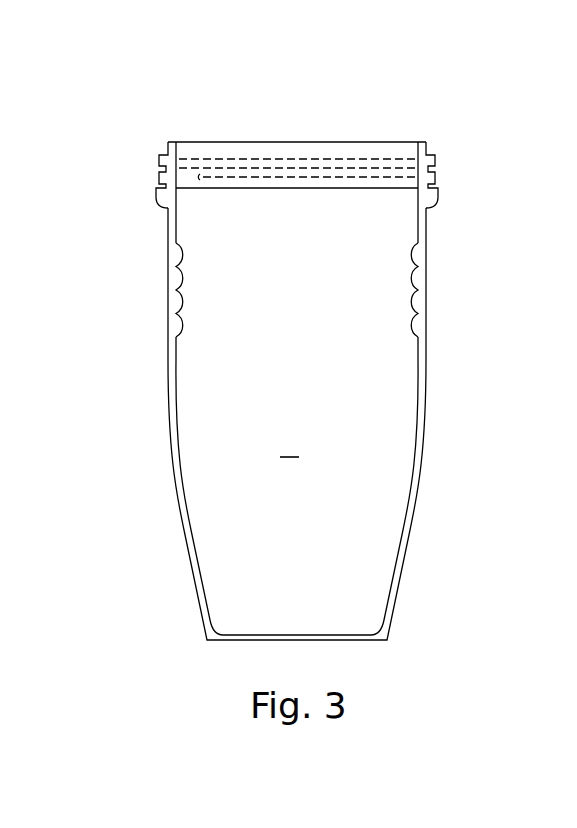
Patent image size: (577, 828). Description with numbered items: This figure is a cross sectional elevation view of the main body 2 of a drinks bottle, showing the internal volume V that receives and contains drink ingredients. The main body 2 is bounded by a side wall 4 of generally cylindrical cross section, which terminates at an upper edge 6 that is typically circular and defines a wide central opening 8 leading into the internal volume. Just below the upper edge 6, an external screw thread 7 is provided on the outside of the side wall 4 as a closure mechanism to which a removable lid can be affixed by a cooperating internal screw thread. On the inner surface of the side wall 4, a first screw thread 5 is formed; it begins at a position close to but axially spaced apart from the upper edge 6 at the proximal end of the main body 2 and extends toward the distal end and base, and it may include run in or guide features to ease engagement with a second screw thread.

The main body 2 is at (309, 349).
The side wall 4 is at (428, 406).
The first screw thread 5 is at (182, 281).
The upper edge 6 is at (172, 141).
The external screw thread 7 is at (271, 181).
The central opening 8 is at (293, 140).